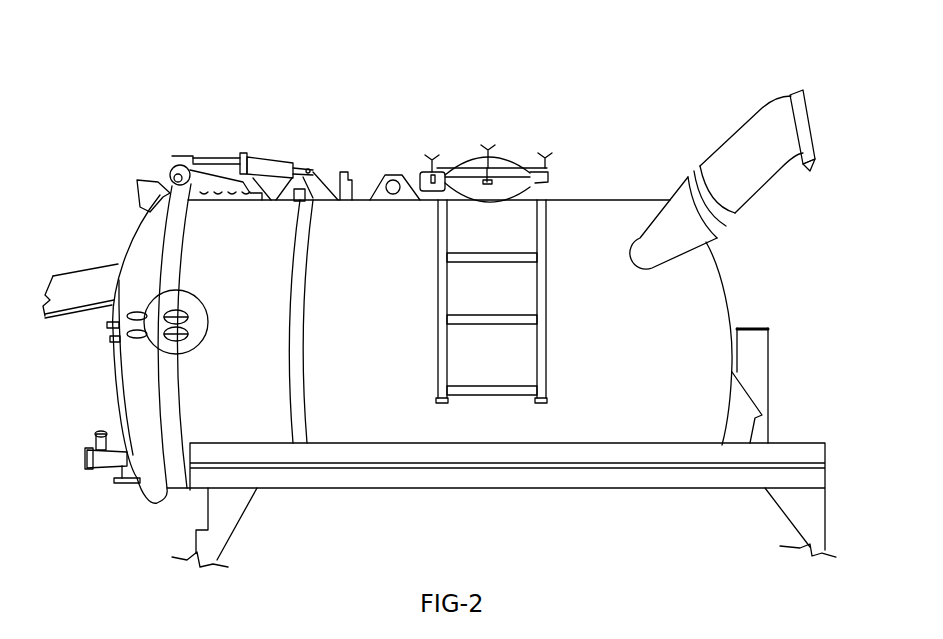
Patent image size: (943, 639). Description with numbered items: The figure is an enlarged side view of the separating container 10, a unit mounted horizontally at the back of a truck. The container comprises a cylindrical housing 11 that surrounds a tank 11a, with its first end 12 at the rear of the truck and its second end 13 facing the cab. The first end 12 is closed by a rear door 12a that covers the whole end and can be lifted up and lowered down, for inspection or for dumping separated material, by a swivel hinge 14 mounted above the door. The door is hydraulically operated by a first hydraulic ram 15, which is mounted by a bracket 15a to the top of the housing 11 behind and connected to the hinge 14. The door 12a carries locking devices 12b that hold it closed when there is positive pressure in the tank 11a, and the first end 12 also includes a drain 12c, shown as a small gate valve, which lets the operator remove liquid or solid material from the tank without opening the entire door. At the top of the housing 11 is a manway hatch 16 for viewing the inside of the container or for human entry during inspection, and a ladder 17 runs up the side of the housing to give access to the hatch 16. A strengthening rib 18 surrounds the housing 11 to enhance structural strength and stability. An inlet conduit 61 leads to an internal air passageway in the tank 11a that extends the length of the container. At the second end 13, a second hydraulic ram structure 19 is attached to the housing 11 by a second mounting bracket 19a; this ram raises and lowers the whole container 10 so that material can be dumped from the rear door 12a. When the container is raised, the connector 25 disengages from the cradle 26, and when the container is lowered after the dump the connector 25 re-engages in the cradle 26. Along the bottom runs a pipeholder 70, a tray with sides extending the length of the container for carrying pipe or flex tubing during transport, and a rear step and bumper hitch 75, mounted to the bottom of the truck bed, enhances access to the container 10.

The separating container 10 is at (600, 92).
The cylindrical housing 11 is at (590, 192).
The tank 11a is at (606, 224).
The first end 12 is at (133, 240).
The rear door 12a is at (133, 360).
The locking devices 12b is at (108, 332).
The drain 12c is at (100, 467).
The second end 13 is at (725, 287).
The swivel hinge 14 is at (173, 176).
The first hydraulic ram 15 is at (257, 162).
The bracket 15a is at (348, 172).
The manway hatch 16 is at (497, 177).
The ladder 17 is at (540, 260).
The strengthening rib 18 is at (300, 440).
The second hydraulic ram structure 19 is at (753, 352).
The second mounting bracket 19a is at (743, 428).
The connector 25 is at (733, 128).
The cradle 26 is at (797, 108).
The inlet conduit 61 is at (82, 275).
The pipeholder 70 is at (625, 477).
The rear step and bumper hitch 75 is at (220, 533).